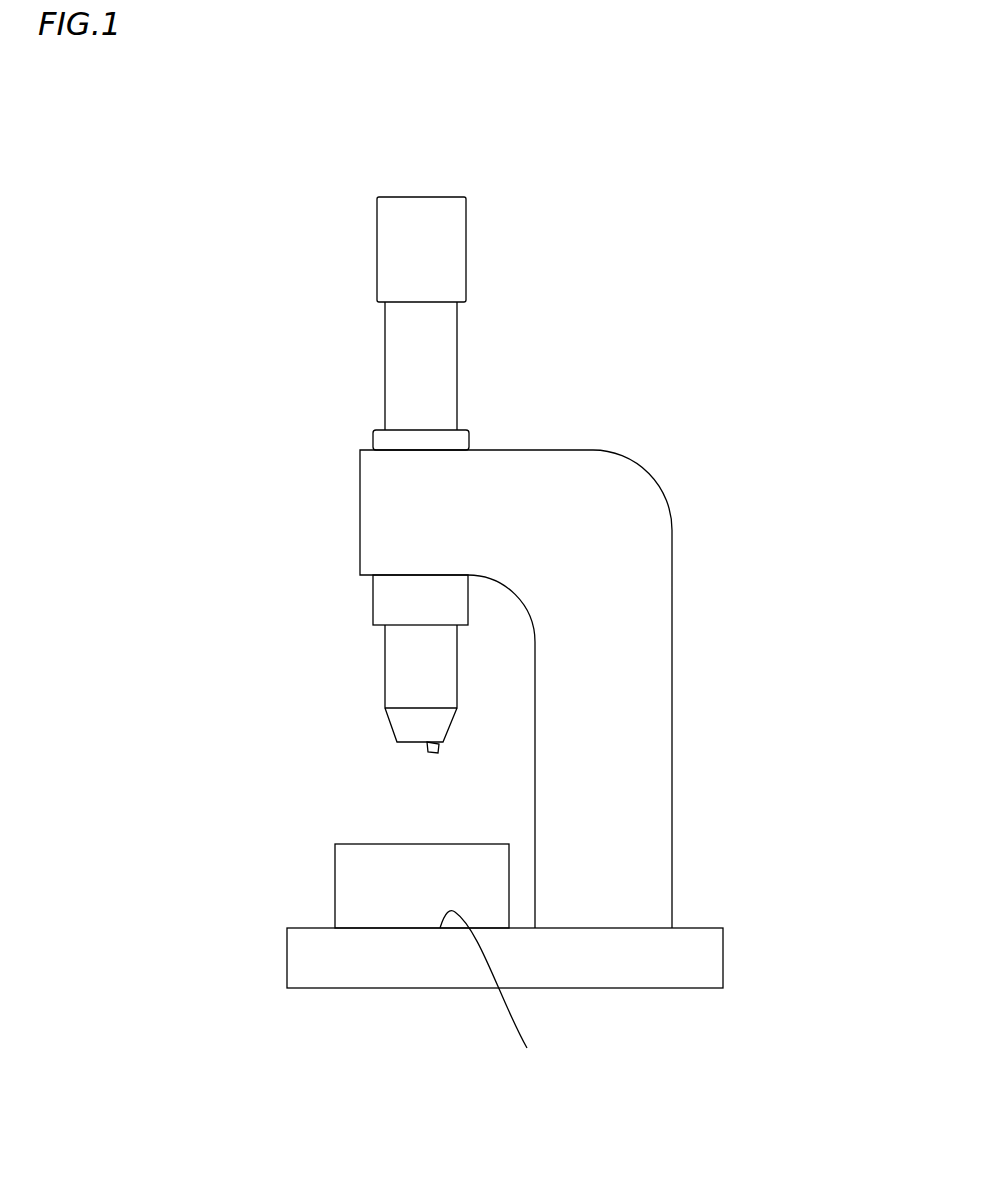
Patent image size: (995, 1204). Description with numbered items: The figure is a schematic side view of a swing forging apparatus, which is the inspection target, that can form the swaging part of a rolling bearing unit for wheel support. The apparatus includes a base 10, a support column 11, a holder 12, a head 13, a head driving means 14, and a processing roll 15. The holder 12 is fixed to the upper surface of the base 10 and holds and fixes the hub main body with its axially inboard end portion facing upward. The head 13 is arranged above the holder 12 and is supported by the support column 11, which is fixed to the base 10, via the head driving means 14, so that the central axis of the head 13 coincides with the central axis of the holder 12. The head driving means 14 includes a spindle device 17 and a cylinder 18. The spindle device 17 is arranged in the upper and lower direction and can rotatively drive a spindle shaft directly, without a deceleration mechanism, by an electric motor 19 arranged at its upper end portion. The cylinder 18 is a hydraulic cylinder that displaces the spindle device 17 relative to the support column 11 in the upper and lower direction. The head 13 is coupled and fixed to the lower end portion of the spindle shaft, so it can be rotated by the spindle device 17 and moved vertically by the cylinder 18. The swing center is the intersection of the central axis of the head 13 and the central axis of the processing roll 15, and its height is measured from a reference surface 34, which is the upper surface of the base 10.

The base 10 is at (423, 972).
The support column 11 is at (642, 552).
The holder 12 is at (365, 888).
The head 13 is at (410, 723).
The head driving means 14 is at (437, 358).
The processing roll 15 is at (440, 750).
The spindle device 17 is at (403, 645).
The cylinder 18 is at (387, 442).
The electric motor 19 is at (422, 214).
The reference surface 34 is at (498, 988).